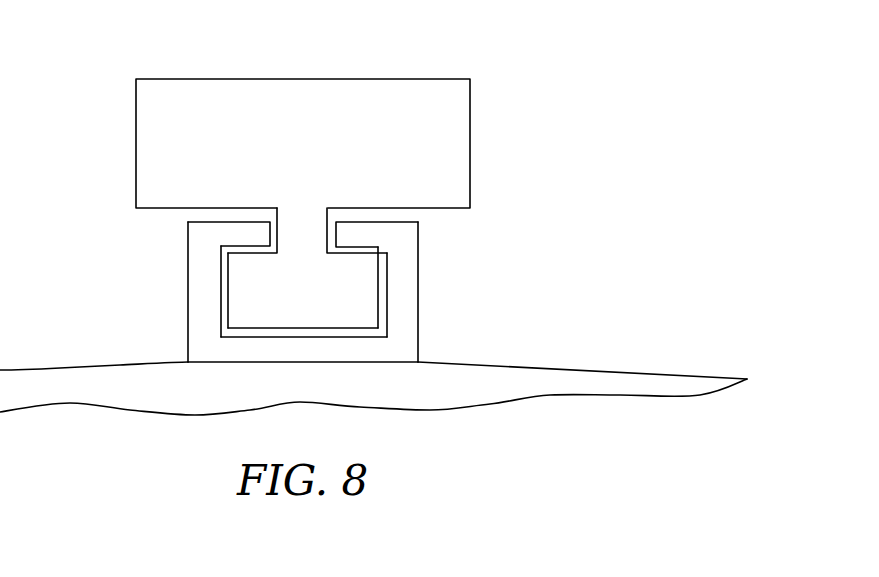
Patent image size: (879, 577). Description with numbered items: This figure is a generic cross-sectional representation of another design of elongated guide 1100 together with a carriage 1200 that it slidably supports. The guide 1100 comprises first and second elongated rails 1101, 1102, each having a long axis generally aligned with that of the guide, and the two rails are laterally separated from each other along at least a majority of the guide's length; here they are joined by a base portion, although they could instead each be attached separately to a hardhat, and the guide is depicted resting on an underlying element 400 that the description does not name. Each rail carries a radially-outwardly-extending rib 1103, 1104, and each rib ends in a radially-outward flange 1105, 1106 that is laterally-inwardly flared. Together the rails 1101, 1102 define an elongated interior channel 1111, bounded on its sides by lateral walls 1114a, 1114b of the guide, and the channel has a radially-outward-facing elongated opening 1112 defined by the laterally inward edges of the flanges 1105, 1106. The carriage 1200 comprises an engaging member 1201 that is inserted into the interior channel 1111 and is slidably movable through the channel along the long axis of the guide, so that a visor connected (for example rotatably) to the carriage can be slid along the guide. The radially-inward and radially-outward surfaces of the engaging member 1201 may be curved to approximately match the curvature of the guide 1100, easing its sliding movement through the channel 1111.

The substrate 400 is at (677, 383).
The elongated guide 1100 is at (305, 243).
The first elongated rail 1101 is at (198, 303).
The second elongated rail 1102 is at (407, 308).
The radially-outwardly-extending rib 1103 is at (208, 302).
The radially-outwardly-extending rib 1104 is at (408, 247).
The radially-outward flange 1105 is at (257, 233).
The radially-outward flange 1106 is at (353, 232).
The elongated interior channel 1111 is at (308, 310).
The radially-outward-facing elongated opening 1112 is at (317, 230).
The lateral wall 1114a is at (218, 263).
The lateral wall 1114b is at (387, 322).
The carriage 1200 is at (136, 79).
The engaging member 1201 is at (342, 272).